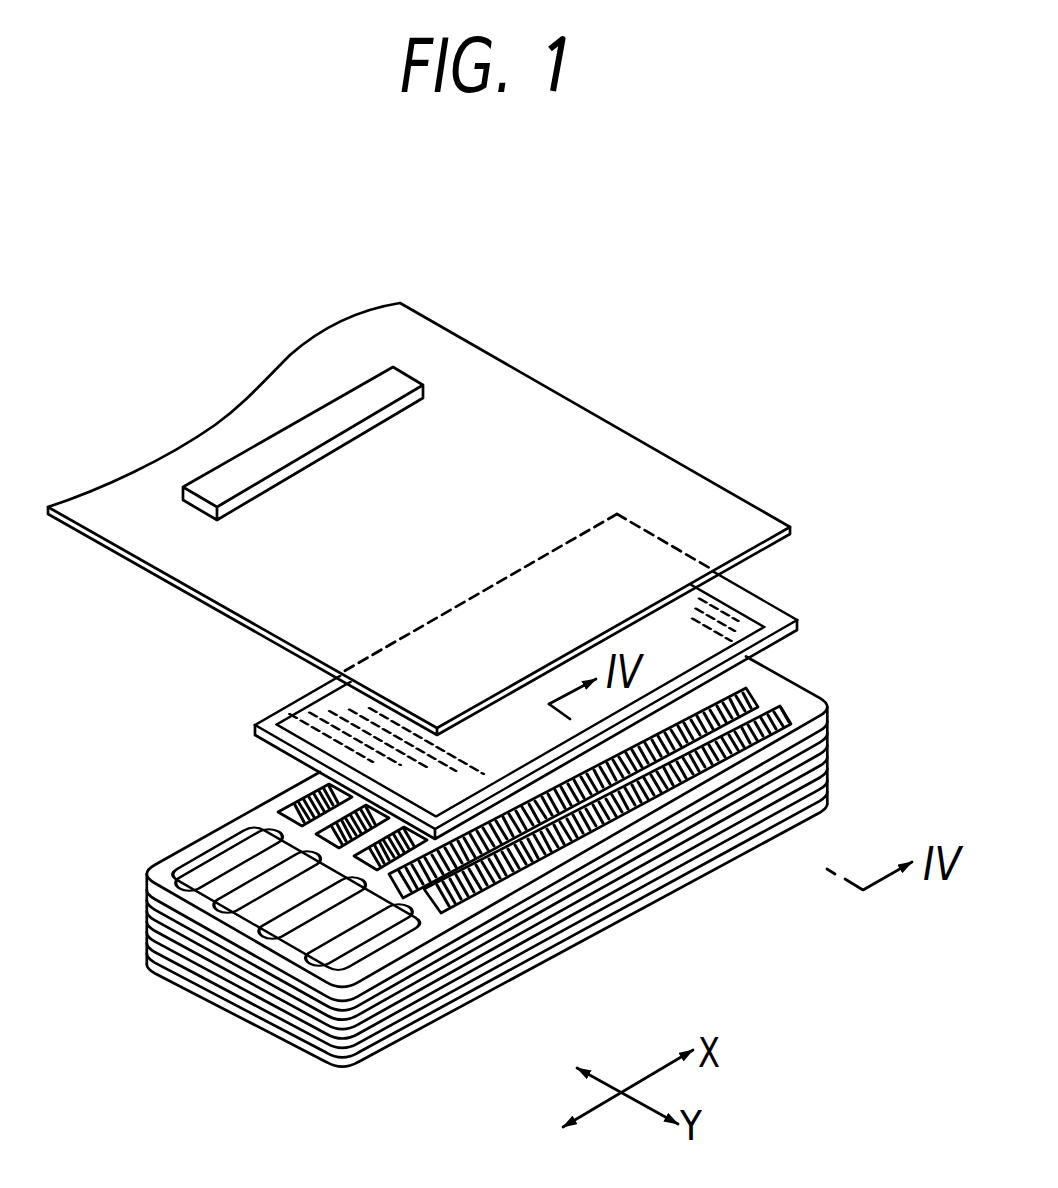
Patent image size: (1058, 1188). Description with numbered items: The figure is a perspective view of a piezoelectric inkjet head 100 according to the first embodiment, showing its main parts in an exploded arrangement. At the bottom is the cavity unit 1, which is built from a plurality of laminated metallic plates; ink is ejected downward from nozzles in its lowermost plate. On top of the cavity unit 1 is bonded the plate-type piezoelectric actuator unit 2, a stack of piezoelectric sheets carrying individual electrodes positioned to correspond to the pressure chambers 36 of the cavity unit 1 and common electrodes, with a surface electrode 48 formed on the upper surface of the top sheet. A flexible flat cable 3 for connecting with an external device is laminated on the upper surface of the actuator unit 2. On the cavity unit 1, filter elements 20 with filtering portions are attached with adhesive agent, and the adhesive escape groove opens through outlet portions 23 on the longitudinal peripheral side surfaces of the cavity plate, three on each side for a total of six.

The piezoelectric inkjet head 100 is at (187, 363).
The cavity unit 1 is at (820, 697).
The piezoelectric actuator unit 2 is at (787, 604).
The flexible flat cable 3 is at (548, 431).
The filter elements 20 is at (187, 865).
The outlet portions 23 is at (759, 759).
The pressure chambers 36 is at (317, 806).
The surface electrode 48 is at (302, 695).